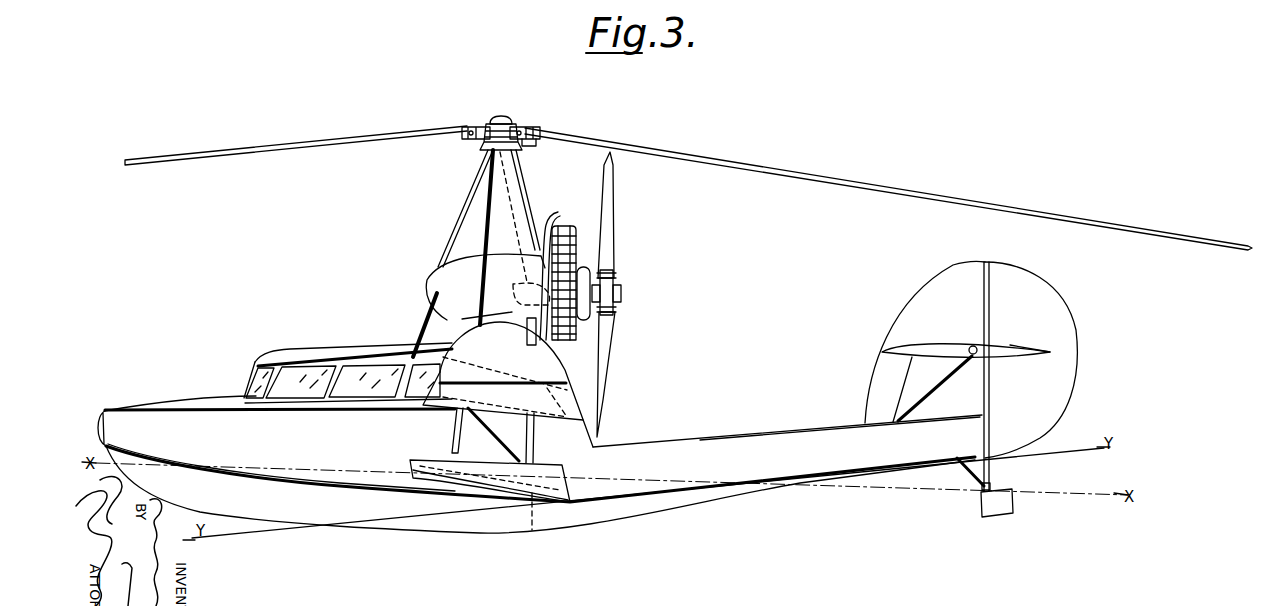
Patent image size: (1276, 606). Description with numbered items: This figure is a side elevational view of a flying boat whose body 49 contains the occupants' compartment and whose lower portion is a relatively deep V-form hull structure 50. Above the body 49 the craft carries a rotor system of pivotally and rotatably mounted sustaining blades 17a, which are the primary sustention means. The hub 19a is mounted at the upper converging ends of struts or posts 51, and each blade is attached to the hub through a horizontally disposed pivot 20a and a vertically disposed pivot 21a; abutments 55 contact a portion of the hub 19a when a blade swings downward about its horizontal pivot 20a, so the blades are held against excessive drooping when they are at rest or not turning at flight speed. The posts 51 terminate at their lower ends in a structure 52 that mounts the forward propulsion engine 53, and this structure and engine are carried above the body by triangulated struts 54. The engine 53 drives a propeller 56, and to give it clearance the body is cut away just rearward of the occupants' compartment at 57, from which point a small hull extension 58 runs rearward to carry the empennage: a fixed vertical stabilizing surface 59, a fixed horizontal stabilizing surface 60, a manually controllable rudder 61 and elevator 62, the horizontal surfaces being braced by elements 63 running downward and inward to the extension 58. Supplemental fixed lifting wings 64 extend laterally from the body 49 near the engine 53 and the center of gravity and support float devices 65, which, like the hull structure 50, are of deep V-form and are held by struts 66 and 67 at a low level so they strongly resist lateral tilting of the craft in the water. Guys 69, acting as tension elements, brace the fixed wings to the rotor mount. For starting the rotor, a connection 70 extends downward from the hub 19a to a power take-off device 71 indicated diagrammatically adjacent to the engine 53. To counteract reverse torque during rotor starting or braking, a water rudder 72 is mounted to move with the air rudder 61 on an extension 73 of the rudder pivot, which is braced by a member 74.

The sustaining blades 17a is at (297, 144).
The hub 19a is at (503, 124).
The horizontal pivot 20a is at (522, 129).
The vertical pivot 21a is at (531, 143).
The abutments 55 is at (478, 139).
The struts or posts 51 is at (473, 189).
The guys 69 is at (484, 232).
The connection 70 is at (511, 199).
The structure 52 is at (493, 278).
The power take-off device 71 is at (514, 302).
The forward propulsion engine 53 is at (565, 228).
The propeller 56 is at (613, 217).
The struts 54 is at (428, 326).
The cut-away portion 57 is at (593, 447).
The fixed lifting wings 64 is at (418, 408).
The body 49 is at (540, 449).
The hull structure 50 is at (540, 489).
The hull extension 58 is at (840, 438).
The float devices 65 is at (430, 460).
The struts 66 is at (452, 426).
The struts 67 is at (490, 440).
The vertical stabilizing surface 59 is at (930, 290).
The rudder 61 is at (1062, 312).
The extension 73 is at (991, 470).
The horizontal stabilizing surface 60 is at (884, 351).
The elevator 62 is at (1035, 357).
The bracing elements 63 is at (938, 384).
The bracing member 74 is at (958, 478).
The water rudder 72 is at (1016, 508).